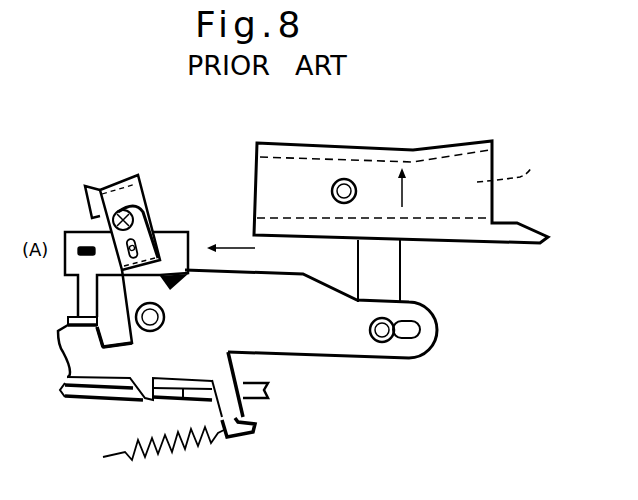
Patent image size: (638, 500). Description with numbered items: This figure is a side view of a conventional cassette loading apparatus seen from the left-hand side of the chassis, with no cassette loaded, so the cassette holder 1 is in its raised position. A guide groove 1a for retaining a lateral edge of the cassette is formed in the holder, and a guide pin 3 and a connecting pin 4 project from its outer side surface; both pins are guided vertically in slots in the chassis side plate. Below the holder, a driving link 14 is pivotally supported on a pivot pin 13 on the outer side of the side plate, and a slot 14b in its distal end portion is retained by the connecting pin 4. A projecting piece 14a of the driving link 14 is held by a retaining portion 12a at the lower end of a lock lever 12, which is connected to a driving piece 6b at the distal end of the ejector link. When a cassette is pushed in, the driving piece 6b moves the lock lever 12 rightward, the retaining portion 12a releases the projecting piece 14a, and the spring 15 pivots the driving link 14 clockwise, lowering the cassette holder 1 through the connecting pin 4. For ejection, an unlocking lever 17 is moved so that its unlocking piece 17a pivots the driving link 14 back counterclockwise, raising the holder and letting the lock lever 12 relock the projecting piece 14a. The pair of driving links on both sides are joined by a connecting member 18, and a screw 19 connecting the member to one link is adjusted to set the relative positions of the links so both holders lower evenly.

The cassette holder 1 is at (413, 148).
The guide groove 1a is at (510, 167).
The guide pin 3 is at (344, 179).
The connecting pin 4 is at (384, 340).
The driving piece 6b is at (80, 247).
The lock lever 12 is at (178, 240).
The retaining portion 12a is at (87, 313).
The pivot pin 13 is at (165, 315).
The driving link 14 is at (330, 332).
The projecting piece 14a is at (60, 335).
The slot 14b is at (415, 330).
The spring 15 is at (183, 447).
The unlocking lever 17 is at (258, 412).
The unlocking piece 17a is at (195, 398).
The connecting member 18 is at (118, 178).
The screw 19 is at (128, 211).